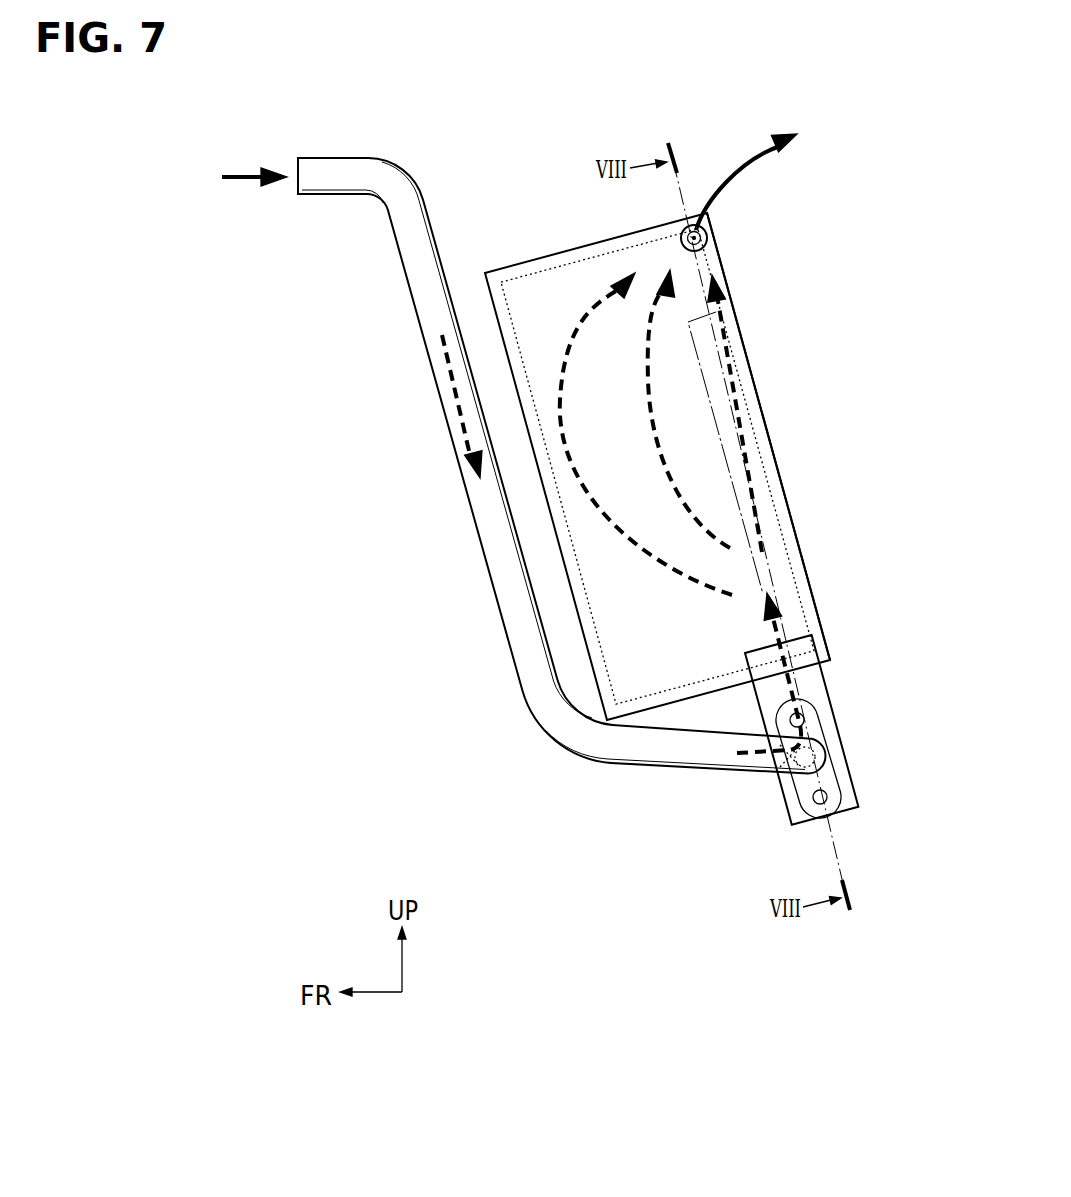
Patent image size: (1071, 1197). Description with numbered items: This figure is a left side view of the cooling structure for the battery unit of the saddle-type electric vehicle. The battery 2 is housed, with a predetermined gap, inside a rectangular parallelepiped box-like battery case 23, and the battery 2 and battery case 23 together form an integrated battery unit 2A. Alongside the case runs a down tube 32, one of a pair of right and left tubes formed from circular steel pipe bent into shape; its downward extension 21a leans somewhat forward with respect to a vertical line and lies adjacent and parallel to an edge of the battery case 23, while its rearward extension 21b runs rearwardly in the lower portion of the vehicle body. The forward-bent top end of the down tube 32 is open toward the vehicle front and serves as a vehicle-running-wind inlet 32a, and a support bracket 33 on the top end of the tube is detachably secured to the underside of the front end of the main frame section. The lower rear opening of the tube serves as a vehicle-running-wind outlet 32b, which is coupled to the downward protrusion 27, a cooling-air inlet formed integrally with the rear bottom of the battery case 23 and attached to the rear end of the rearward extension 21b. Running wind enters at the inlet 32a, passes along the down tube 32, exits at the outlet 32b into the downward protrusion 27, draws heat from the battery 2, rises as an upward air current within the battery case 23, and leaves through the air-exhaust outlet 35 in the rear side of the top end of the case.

The battery 2 is at (780, 524).
The battery unit 2A is at (765, 395).
The downward extension 21a is at (492, 542).
The rearward extension 21b is at (673, 757).
The battery case 23 is at (743, 338).
The downward protrusion 27 is at (847, 785).
The down tube 32 is at (547, 730).
The vehicle-running-wind inlet 32a is at (294, 160).
The vehicle-running-wind outlet 32b is at (782, 766).
The support bracket 33 is at (830, 806).
The air-exhaust outlet 35 is at (712, 240).